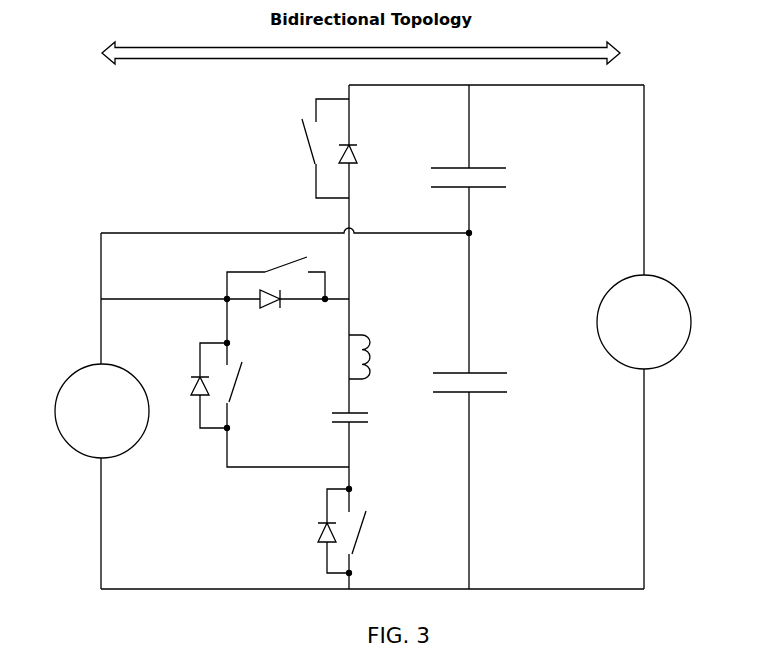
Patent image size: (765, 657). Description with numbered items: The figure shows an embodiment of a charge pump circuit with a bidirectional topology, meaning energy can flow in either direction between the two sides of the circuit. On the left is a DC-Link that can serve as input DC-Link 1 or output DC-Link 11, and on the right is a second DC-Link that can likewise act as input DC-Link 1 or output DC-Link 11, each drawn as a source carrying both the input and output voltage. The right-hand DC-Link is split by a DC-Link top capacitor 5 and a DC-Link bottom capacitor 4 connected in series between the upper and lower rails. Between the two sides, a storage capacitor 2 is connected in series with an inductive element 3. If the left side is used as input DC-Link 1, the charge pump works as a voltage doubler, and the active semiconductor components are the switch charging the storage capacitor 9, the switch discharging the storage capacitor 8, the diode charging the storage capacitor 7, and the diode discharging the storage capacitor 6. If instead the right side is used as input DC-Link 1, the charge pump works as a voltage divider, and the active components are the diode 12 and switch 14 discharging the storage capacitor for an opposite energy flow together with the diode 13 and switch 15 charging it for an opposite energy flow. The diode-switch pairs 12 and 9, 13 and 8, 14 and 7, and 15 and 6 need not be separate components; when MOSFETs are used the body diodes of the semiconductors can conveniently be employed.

The input DC-Link 1 is at (373, 366).
The output DC-Link 11 is at (373, 366).
The storage capacitor 2 is at (342, 419).
The inductive element 3 is at (353, 357).
The DC-Link bottom capacitor 4 is at (482, 385).
The DC-Link top capacitor 5 is at (477, 178).
The diode discharging the storage capacitor 6 is at (358, 155).
The diode charging the storage capacitor 7 is at (270, 316).
The switch discharging the storage capacitor 8 is at (243, 382).
The switch charging the storage capacitor 9 is at (369, 532).
The diode discharging the storage capacitor for an opposite energy flow 12 is at (320, 531).
The diode charging the storage capacitor for an opposite energy flow 13 is at (196, 385).
The switch discharging the storage capacitor for an opposite energy flow 14 is at (276, 272).
The switch charging the storage capacitor for an opposite energy flow 15 is at (316, 148).